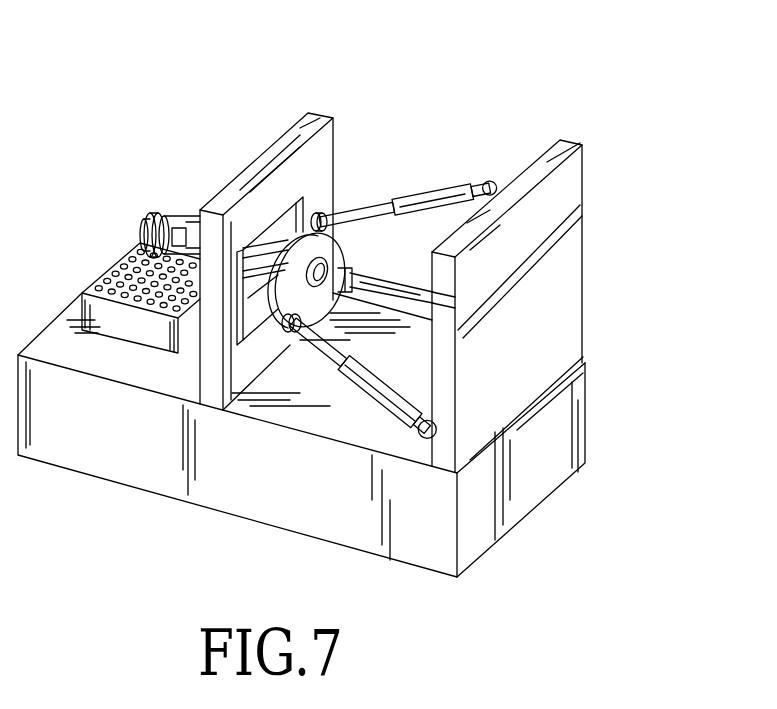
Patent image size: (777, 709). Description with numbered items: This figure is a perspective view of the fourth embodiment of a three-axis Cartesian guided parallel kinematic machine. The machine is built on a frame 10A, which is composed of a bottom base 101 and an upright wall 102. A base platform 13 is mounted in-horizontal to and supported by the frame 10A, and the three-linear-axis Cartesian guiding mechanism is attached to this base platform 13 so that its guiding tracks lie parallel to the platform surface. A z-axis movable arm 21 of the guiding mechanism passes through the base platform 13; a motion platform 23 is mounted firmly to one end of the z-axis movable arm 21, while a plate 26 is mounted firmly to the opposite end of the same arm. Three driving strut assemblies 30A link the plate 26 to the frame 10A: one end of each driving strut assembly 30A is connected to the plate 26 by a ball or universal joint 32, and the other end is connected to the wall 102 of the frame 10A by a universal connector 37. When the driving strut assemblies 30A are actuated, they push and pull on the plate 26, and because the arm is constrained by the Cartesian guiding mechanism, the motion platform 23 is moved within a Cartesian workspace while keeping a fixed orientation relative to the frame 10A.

The frame 10A is at (355, 299).
The base platform 13 is at (310, 117).
The z-axis movable arm 21 is at (262, 247).
The motion platform 23 is at (167, 212).
The plate 26 is at (293, 240).
The driving strut assembly 30A is at (414, 262).
The ball or universal joint 32 is at (322, 215).
The universal connector 37 is at (496, 181).
The bottom base 101 is at (113, 460).
The wall 102 is at (568, 203).